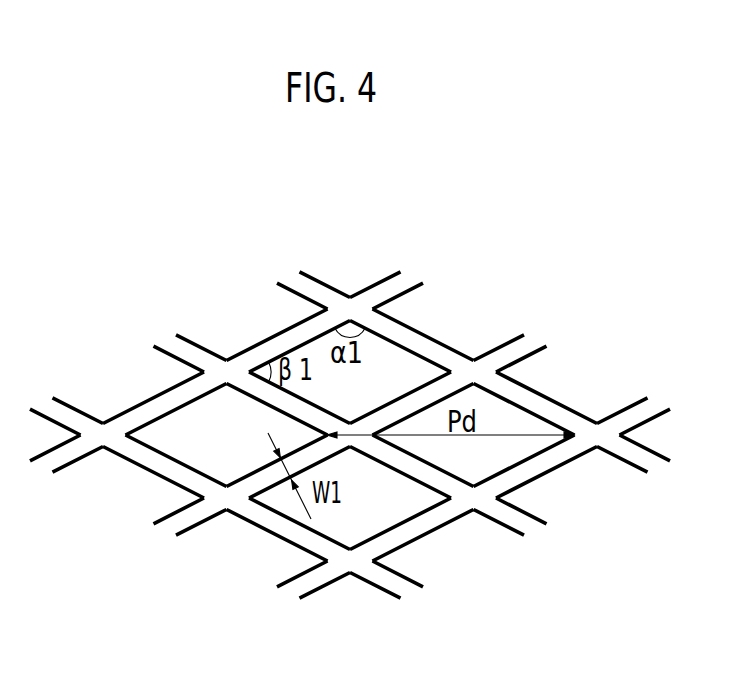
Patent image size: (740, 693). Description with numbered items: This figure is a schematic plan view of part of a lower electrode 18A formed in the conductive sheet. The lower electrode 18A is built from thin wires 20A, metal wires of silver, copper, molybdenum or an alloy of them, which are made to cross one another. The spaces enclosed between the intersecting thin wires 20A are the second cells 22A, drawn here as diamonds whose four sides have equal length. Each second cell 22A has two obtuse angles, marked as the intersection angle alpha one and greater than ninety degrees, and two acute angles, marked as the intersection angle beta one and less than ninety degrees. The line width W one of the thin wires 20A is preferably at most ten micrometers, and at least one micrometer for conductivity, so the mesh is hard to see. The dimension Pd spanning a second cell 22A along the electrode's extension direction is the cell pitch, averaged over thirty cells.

The lower electrode 18A is at (350, 400).
The thin wire 20A is at (502, 357).
The second cell 22A is at (178, 405).